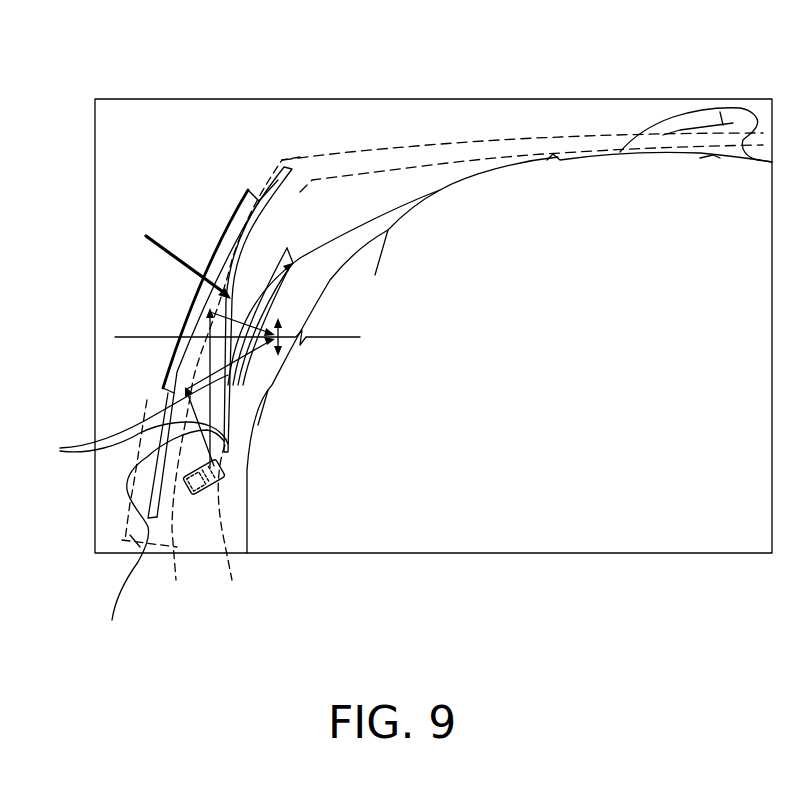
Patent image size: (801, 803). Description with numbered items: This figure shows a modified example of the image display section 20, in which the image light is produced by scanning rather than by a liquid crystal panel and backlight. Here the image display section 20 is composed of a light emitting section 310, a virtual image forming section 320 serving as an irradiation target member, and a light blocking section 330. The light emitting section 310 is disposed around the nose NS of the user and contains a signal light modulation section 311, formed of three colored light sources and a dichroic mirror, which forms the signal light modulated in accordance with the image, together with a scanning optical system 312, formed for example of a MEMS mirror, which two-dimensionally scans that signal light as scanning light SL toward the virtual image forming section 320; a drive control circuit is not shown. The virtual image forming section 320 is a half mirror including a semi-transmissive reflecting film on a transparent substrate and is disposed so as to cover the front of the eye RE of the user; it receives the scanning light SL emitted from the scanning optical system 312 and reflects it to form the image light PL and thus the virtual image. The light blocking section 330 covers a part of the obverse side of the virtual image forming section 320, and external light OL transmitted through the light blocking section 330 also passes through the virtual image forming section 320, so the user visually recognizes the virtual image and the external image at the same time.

The image display section 20 is at (271, 82).
The light emitting section 310 is at (203, 557).
The signal light modulation section 311 is at (196, 481).
The scanning optical system 312 is at (214, 495).
The virtual image forming section 320 is at (280, 190).
The light blocking section 330 is at (207, 262).
The eye RE is at (283, 334).
The external light OL is at (207, 263).
The image light PL is at (334, 287).
The scanning light SL is at (126, 421).
The nose NS is at (158, 541).